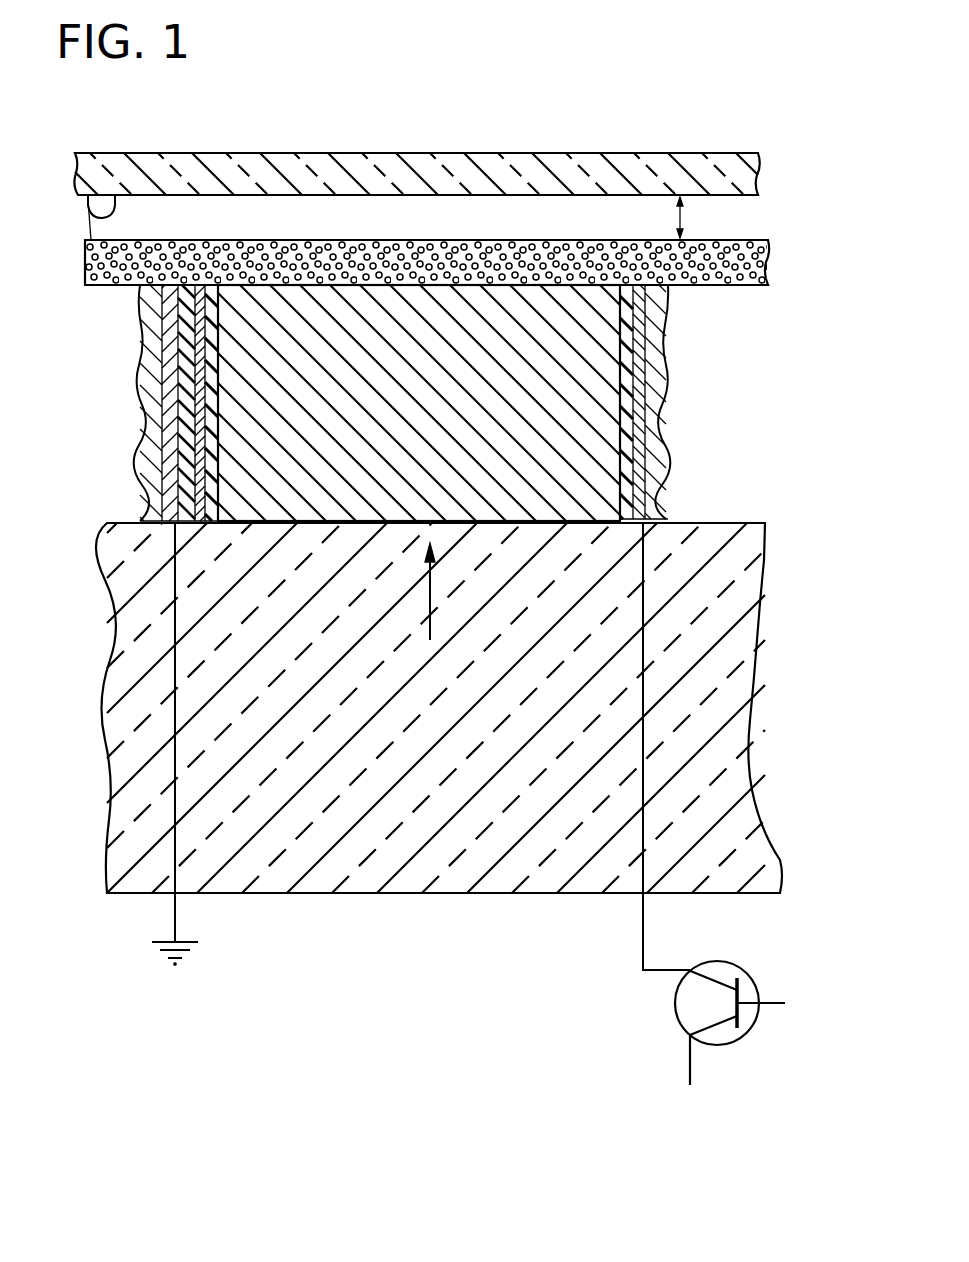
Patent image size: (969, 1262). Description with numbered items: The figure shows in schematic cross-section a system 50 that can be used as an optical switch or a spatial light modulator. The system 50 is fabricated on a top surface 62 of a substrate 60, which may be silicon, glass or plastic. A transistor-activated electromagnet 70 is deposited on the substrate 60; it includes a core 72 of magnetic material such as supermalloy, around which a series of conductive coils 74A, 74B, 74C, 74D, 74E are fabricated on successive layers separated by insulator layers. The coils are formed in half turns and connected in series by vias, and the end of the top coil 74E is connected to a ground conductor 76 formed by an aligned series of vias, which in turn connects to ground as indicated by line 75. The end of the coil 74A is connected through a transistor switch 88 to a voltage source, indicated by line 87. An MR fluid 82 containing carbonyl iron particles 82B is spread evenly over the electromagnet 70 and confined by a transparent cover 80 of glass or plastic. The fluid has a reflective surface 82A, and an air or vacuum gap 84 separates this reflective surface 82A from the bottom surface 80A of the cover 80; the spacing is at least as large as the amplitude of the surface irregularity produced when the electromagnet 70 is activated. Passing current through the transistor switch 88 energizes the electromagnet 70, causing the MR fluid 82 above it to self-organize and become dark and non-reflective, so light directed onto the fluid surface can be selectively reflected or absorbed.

The system 50 is at (526, 76).
The transparent cover 80 is at (705, 152).
The bottom surface of the cover 80A is at (88, 216).
The air or vacuum gap 84 is at (735, 211).
The MR fluid 82 is at (770, 259).
The reflective surface 82A is at (415, 240).
The carbonyl iron particles 82B is at (93, 263).
The core 72 is at (422, 407).
The coil 74A is at (150, 508).
The coil 74B is at (152, 460).
The coil 74C is at (145, 400).
The coil 74D is at (140, 362).
The top coil 74E is at (158, 328).
The ground conductor 76 is at (167, 523).
The top surface of the substrate 62 is at (703, 523).
The substrate 60 is at (427, 893).
The electromagnet 70 is at (428, 605).
The ground line 75 is at (175, 921).
The line 87 is at (643, 934).
The transistor switch 88 is at (745, 968).